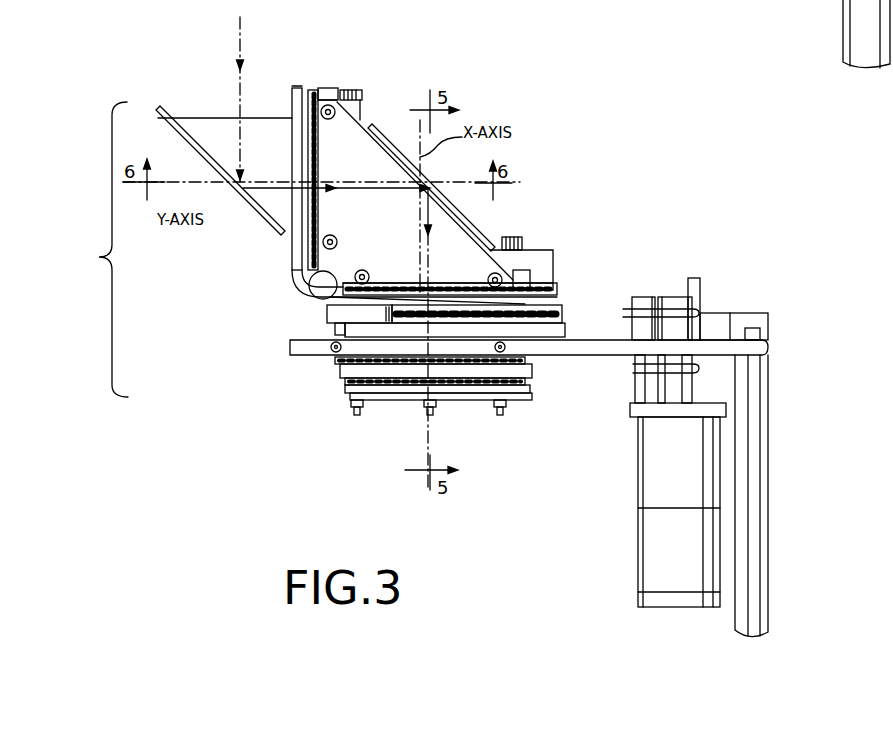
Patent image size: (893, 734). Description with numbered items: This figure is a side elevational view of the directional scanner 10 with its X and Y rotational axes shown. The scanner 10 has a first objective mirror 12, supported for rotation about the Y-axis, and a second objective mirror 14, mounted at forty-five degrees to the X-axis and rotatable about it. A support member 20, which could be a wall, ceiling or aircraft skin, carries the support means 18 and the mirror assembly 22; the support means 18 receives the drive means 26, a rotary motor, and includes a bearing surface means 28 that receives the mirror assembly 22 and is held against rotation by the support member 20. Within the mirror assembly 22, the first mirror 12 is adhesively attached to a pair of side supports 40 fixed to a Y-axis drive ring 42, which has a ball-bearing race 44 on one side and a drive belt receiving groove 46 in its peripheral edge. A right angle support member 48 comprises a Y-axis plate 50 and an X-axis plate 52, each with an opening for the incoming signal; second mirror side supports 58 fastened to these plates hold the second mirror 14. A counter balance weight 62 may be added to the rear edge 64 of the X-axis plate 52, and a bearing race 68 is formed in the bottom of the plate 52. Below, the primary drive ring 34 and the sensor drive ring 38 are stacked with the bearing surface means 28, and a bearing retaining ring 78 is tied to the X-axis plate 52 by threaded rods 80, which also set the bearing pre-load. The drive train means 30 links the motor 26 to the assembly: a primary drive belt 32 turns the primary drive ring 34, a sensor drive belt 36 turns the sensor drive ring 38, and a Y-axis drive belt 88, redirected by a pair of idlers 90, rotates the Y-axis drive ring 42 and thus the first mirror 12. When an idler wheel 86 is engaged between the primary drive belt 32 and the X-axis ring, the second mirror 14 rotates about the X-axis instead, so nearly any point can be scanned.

The directional scanner 10 is at (292, 460).
The first objective mirror 12 is at (156, 112).
The second objective mirror 14 is at (393, 150).
The support means 18 is at (535, 510).
The support member 20 is at (770, 350).
The mirror assembly 22 is at (100, 249).
The drive means 26 is at (643, 576).
The bearing surface means 28 is at (810, 34).
The drive train means 30 is at (283, 303).
The primary drive belt 32 is at (633, 305).
The primary drive ring 34 is at (540, 283).
The sensor drive belt 36 is at (617, 374).
The sensor drive ring 38 is at (532, 373).
The side supports 40 is at (205, 118).
The Y-axis drive ring 42 is at (292, 92).
The ball-bearing race 44 is at (313, 90).
The drive belt receiving groove 46 is at (298, 88).
The right angle support member 48 is at (356, 90).
The Y-axis plate 50 is at (336, 88).
The X-axis plate 52 is at (553, 268).
The second mirror side supports 58 is at (465, 233).
The counter balance weight 62 is at (522, 258).
The rear edge 64 is at (525, 283).
The bearing race 68 is at (362, 270).
The bearing retaining ring 78 is at (400, 400).
The threaded rods 80 is at (357, 416).
The idler wheel 86 is at (338, 327).
The Y-axis drive belt 88 is at (295, 275).
The idlers 90 is at (320, 292).